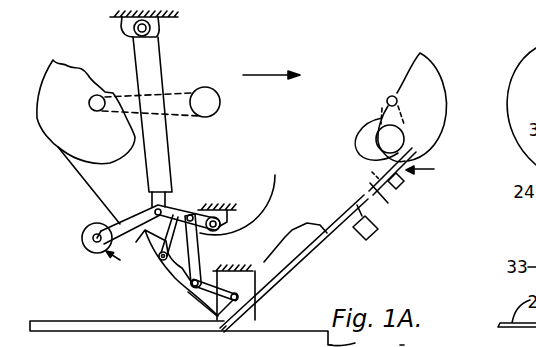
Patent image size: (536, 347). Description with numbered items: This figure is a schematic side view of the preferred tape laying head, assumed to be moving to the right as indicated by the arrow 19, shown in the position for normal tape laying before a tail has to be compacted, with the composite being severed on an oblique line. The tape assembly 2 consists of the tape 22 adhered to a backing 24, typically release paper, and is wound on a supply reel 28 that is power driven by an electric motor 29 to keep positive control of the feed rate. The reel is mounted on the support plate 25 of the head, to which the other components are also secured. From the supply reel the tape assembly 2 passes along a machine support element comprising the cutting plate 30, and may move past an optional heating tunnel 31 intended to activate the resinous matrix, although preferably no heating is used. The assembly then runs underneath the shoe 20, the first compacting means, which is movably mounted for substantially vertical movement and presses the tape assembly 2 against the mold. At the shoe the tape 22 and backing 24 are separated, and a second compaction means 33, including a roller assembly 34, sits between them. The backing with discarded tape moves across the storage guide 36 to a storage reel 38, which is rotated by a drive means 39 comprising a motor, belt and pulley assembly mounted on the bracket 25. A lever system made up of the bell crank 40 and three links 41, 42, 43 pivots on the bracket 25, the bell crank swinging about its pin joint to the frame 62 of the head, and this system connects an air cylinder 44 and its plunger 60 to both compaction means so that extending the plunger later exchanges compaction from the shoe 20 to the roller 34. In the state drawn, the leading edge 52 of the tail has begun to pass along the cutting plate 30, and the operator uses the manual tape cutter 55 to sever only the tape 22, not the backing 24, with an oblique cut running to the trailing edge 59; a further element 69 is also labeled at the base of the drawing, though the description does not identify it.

The tape assembly 2 is at (425, 169).
The arrow 19 is at (271, 65).
The shoe 20 is at (262, 300).
The tape 22 is at (46, 320).
The backing 24 is at (86, 182).
The support plate 25 is at (172, 7).
The supply reel 28 is at (432, 112).
The electric motor 29 is at (386, 147).
The cutting plate 30 is at (300, 254).
The heating tunnel 31 is at (393, 190).
The second compaction means 33 is at (110, 261).
The roller assembly 34 is at (88, 226).
The storage guide 36 is at (166, 271).
The storage reel 38 is at (82, 142).
The drive means 39 is at (215, 96).
The bell crank 40 is at (130, 216).
The link 41 is at (248, 229).
The link 42 is at (203, 306).
The link 43 is at (125, 262).
The air cylinder 44 is at (148, 70).
The leading edge 52 is at (335, 255).
The manual tape cutter 55 is at (372, 235).
The trailing edge 59 is at (410, 341).
The plunger 60 is at (166, 197).
The frame 62 is at (245, 194).
The base support 69 is at (350, 341).